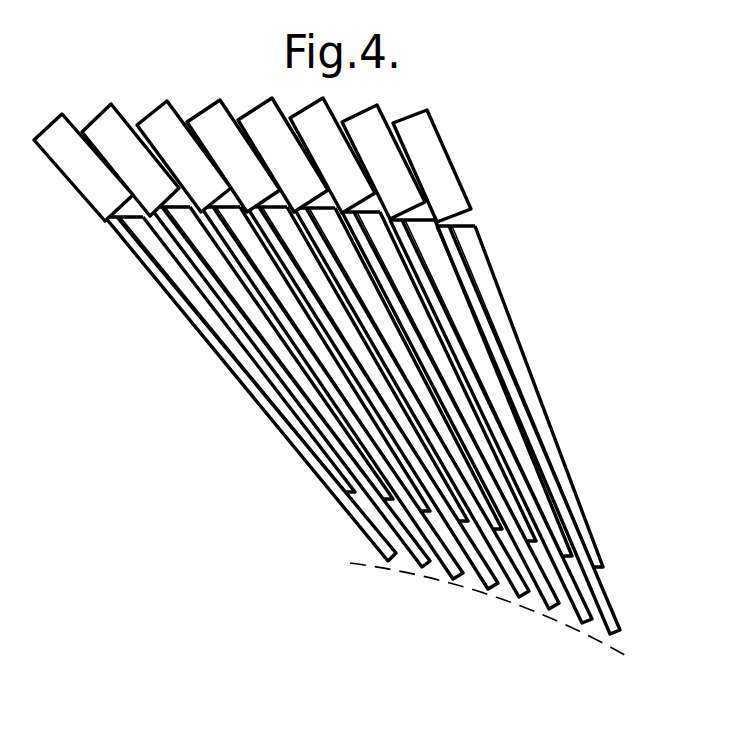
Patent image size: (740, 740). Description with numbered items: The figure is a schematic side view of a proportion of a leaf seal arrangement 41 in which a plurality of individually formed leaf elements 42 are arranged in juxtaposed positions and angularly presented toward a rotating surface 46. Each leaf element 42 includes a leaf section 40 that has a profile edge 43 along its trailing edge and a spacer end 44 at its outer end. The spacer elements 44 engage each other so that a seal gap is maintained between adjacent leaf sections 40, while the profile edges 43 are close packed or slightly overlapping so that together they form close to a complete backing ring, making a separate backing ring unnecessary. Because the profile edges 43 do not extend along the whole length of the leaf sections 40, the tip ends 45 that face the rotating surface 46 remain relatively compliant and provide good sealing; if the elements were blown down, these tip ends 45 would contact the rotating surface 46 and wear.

The leaf section 40 is at (496, 351).
The leaf seal arrangement 41 is at (331, 376).
The leaf element 42 is at (193, 323).
The profile edge 43 is at (541, 406).
The spacer end 44 is at (449, 172).
The tip end 45 is at (453, 575).
The rotating surface 46 is at (580, 628).